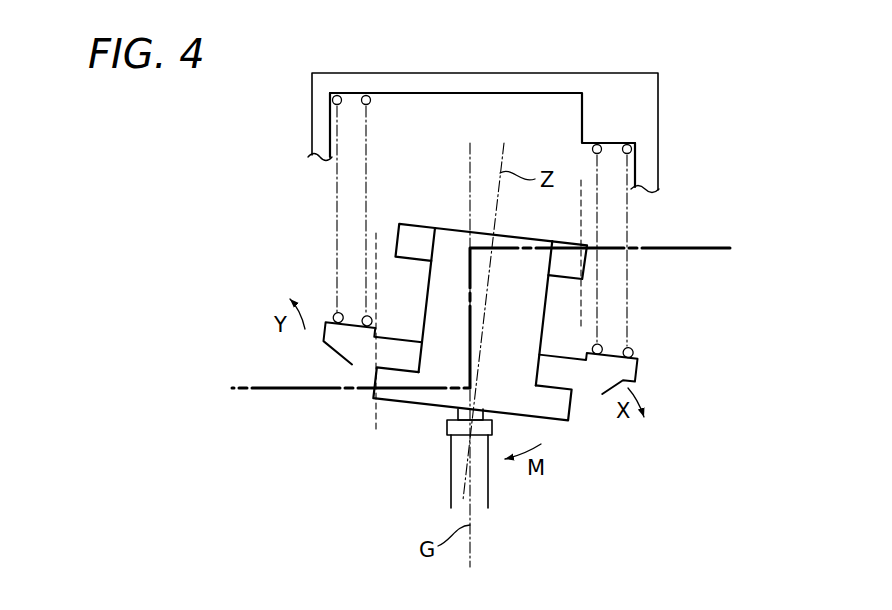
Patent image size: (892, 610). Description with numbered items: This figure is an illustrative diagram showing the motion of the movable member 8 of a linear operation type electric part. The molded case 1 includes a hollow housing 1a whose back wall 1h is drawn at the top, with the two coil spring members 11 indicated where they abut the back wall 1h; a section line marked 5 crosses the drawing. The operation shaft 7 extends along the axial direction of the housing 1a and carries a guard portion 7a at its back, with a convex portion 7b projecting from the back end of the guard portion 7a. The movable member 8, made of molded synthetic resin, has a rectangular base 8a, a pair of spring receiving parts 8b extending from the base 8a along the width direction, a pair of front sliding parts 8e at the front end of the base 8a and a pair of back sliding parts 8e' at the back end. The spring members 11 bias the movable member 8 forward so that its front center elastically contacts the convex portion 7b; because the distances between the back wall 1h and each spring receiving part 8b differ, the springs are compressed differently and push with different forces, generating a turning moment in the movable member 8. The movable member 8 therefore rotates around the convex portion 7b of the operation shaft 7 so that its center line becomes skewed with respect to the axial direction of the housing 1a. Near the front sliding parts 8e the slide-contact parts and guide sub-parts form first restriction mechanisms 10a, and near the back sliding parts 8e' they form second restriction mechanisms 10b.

The molded case 1 is at (521, 68).
The hollow housing 1a is at (423, 128).
The back wall 1h is at (380, 78).
The coil spring members 11 is at (348, 120).
The section line 5- 5 is at (480, 318).
The operation shaft 7 is at (451, 481).
The guard portion 7a is at (447, 428).
The convex portion 7b is at (457, 413).
The movable member 8 is at (416, 298).
The rectangular base 8a is at (525, 305).
The spring receiving parts 8b is at (325, 334).
The front sliding parts 8e is at (468, 422).
The back sliding parts 8e' is at (510, 244).
The first restriction mechanisms 10a is at (364, 395).
The second restriction mechanisms 10b is at (592, 238).